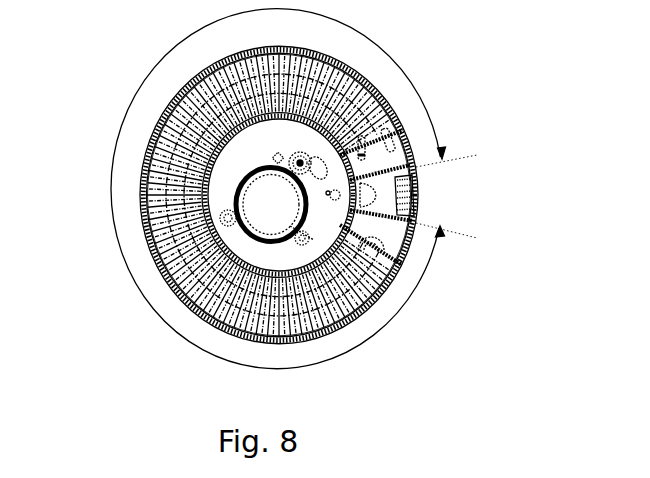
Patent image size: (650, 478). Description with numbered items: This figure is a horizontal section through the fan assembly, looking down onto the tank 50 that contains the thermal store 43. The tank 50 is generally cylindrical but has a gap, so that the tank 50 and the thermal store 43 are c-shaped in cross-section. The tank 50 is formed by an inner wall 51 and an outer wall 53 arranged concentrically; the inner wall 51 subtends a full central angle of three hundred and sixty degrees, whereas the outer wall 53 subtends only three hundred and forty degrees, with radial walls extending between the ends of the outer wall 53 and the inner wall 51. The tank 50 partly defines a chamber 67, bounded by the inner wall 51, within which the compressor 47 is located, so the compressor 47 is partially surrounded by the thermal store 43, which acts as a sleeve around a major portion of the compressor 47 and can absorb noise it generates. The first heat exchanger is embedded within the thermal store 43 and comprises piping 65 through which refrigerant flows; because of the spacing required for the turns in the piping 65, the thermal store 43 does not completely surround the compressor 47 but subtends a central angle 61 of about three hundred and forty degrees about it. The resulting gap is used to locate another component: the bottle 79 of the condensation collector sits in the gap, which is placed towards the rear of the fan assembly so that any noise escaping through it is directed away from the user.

The thermal store 43 is at (205, 283).
The compressor 47 is at (262, 215).
The tank 50 is at (156, 112).
The inner wall 51 is at (200, 187).
The outer wall 53 is at (148, 153).
The central angle 61 is at (408, 92).
The piping 65 is at (350, 300).
The chamber 67 is at (232, 235).
The bottle 79 is at (418, 194).